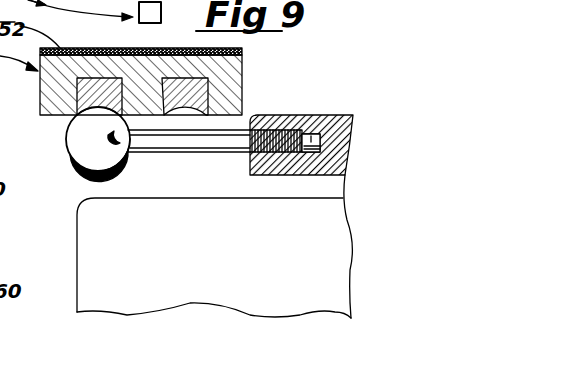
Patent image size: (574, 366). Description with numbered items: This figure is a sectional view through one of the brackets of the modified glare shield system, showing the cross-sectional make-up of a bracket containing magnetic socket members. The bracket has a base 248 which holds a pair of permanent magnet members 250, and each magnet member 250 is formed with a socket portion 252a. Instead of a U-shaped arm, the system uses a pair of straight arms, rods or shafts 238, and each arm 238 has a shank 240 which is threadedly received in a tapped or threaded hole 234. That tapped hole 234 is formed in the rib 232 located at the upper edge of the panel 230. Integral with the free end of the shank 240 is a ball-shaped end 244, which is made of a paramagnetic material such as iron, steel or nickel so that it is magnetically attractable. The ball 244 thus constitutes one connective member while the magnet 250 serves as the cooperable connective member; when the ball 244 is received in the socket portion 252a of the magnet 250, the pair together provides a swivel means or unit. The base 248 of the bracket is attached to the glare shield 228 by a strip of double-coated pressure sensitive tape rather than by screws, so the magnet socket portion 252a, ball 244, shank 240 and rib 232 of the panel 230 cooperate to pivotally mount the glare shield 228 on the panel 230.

The base 248 is at (243, 68).
The permanent magnet member 250 is at (197, 97).
The ball-shaped end 244 is at (80, 168).
The shank 240 is at (213, 155).
The arm 238 is at (172, 160).
The rib 232 is at (303, 183).
The tapped hole 234 is at (312, 128).
The panel 230 is at (88, 288).
The glare shield 228 is at (157, 316).
The socket portion 252a is at (178, 103).